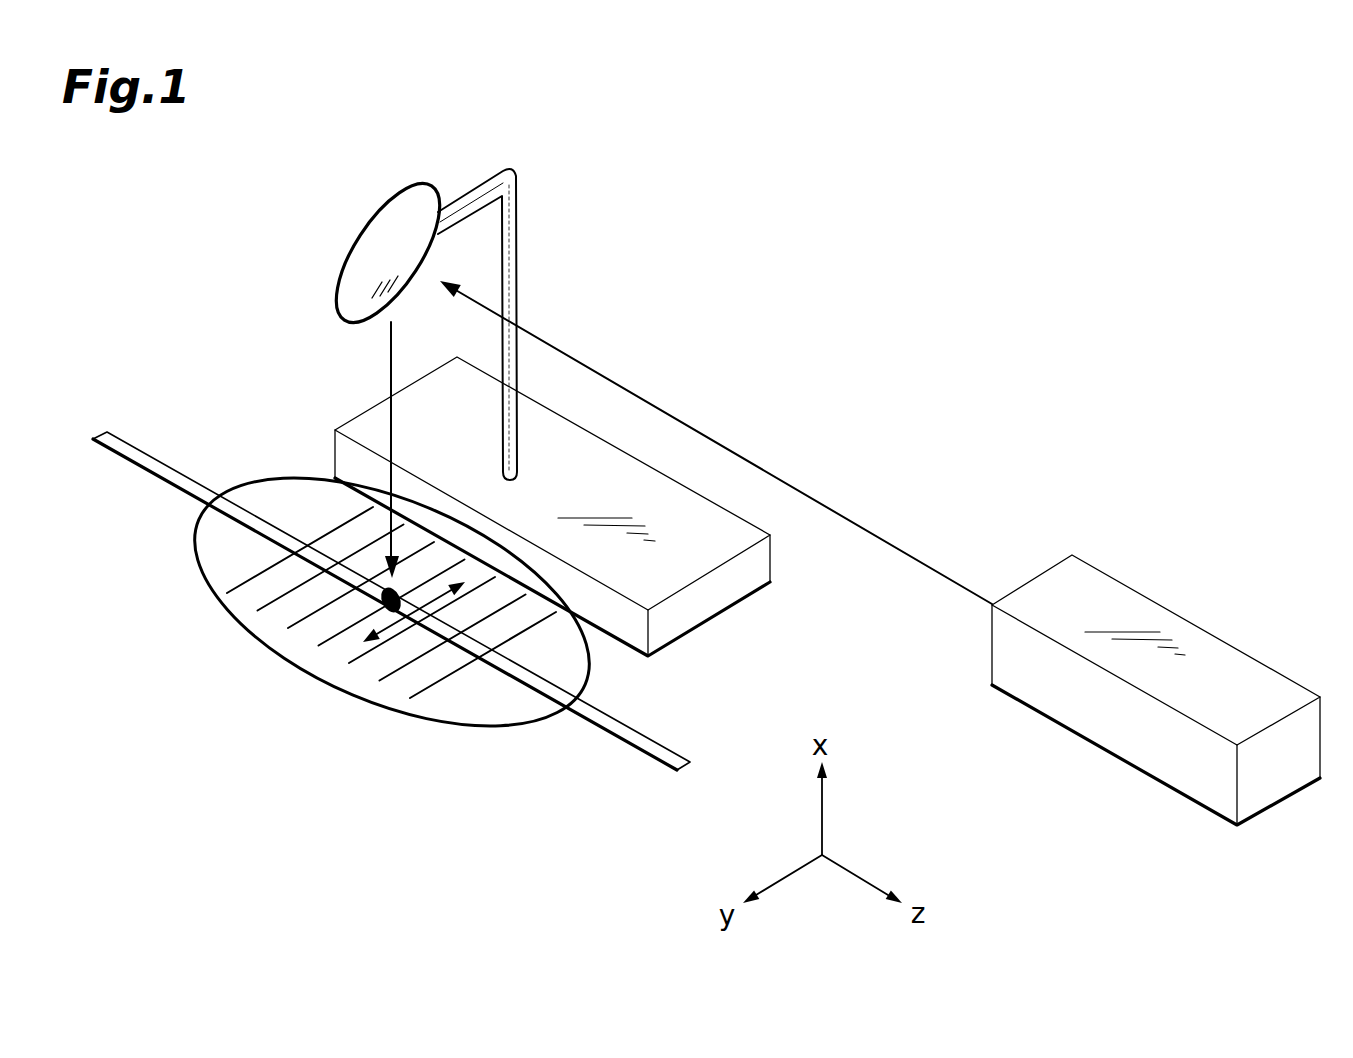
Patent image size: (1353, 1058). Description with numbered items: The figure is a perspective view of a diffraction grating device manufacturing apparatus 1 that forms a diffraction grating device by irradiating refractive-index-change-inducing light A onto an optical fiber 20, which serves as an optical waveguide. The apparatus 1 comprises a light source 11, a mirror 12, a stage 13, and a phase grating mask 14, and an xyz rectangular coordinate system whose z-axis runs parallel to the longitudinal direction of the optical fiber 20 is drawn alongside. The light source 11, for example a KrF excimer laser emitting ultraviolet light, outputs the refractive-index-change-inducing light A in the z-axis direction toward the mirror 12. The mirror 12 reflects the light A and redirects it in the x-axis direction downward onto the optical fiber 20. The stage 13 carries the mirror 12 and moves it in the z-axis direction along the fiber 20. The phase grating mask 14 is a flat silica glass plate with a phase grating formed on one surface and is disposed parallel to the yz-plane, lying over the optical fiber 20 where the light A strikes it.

The diffraction grating device manufacturing apparatus 1 is at (958, 303).
The light source 11 is at (1185, 628).
The mirror 12 is at (368, 244).
The stage 13 is at (703, 612).
The phase grating mask 14 is at (346, 686).
The optical fiber 20 is at (630, 735).
The refractive-index-change-inducing light A is at (821, 497).